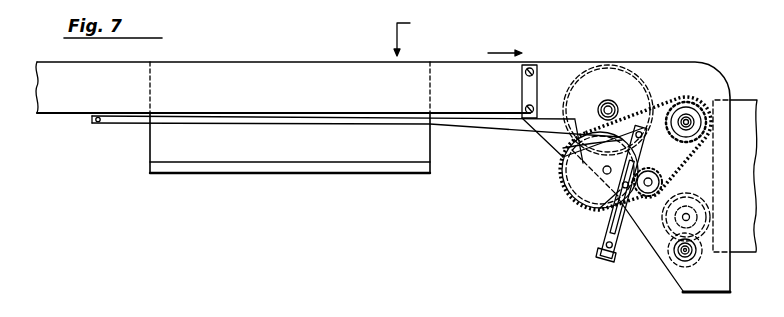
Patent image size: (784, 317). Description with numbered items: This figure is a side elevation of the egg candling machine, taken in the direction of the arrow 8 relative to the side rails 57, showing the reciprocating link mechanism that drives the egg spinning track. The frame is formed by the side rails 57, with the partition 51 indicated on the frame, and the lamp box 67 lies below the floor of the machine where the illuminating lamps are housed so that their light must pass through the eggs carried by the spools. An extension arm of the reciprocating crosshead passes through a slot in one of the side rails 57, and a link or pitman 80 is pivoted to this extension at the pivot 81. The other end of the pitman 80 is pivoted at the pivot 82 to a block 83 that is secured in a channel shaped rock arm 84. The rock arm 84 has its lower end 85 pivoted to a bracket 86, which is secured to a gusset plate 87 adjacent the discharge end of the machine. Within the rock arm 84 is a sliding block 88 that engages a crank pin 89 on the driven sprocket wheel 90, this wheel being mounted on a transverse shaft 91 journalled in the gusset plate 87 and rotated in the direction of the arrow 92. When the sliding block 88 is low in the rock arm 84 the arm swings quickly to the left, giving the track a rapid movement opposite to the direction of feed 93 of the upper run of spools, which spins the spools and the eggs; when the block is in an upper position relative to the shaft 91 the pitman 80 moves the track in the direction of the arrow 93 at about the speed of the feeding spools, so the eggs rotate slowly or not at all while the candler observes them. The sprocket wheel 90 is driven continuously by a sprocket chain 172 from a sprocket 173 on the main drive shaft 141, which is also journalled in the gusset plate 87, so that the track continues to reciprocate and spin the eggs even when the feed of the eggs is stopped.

The section line 8 is at (398, 31).
The side rails 57 is at (318, 77).
The partition 51 is at (460, 48).
The arrow indicating direction of feed 93 is at (505, 45).
The link or pitman 80 is at (210, 118).
The pivot 81 is at (97, 123).
The lamp box 67 is at (302, 150).
The arrow indicating direction of rotation 92 is at (585, 151).
The pivot 82 is at (590, 157).
The block 83 is at (583, 163).
The driven sprocket wheel 90 is at (600, 173).
The transverse shaft 91 is at (600, 188).
The sprocket chain 172 is at (658, 100).
The sprocket 173 is at (690, 108).
The channel shaped rock arm 84 is at (620, 203).
The sliding block 88 is at (606, 218).
The crank pin 89 is at (598, 210).
The lower end of rock arm 85 is at (603, 258).
The bracket 86 is at (613, 257).
The gusset plate 87 is at (681, 270).
The main drive shaft 141 is at (714, 185).